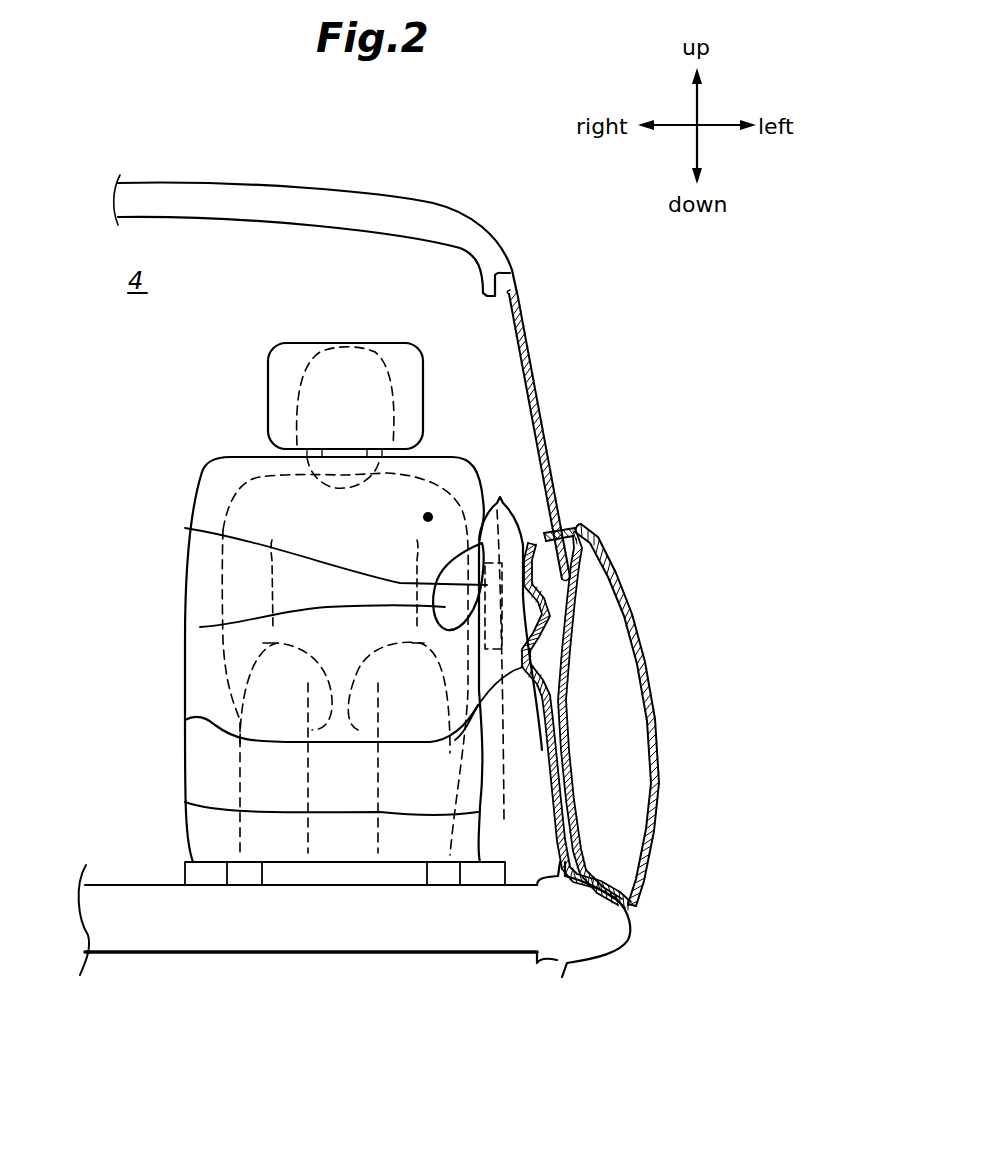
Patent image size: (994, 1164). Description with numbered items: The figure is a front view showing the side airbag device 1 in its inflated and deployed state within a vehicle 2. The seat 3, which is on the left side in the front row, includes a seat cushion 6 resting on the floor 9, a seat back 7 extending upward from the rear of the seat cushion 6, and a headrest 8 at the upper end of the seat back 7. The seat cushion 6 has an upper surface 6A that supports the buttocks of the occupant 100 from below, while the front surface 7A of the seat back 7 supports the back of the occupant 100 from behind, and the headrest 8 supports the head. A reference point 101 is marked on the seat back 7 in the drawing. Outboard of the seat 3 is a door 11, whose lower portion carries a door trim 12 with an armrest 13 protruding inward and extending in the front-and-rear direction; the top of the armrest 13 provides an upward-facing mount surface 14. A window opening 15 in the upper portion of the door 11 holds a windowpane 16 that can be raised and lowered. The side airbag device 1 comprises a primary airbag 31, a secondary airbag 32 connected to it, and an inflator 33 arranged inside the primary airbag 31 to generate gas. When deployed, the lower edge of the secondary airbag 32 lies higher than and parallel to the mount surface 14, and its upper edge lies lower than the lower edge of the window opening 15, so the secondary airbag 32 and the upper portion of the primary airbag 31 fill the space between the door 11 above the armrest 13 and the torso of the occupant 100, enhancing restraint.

The side airbag device 1 is at (512, 502).
The vehicle 2 is at (314, 186).
The seat 3 is at (336, 663).
The seat cushion 6 is at (197, 753).
The upper surface 6A is at (272, 742).
The seat back 7 is at (206, 500).
The front surface 7A is at (207, 571).
The headrest 8 is at (295, 350).
The floor 9 is at (122, 884).
The door 11 is at (654, 827).
The door trim 12 is at (552, 762).
The armrest 13 is at (500, 692).
The mount surface 14 is at (558, 627).
The window opening 15 is at (572, 523).
The windowpane 16 is at (521, 324).
The primary airbag 31 is at (470, 527).
The secondary airbag 32 is at (200, 627).
The inflator 33 is at (185, 529).
The occupant 100 is at (255, 488).
The occupant shoulder point 101 is at (428, 512).